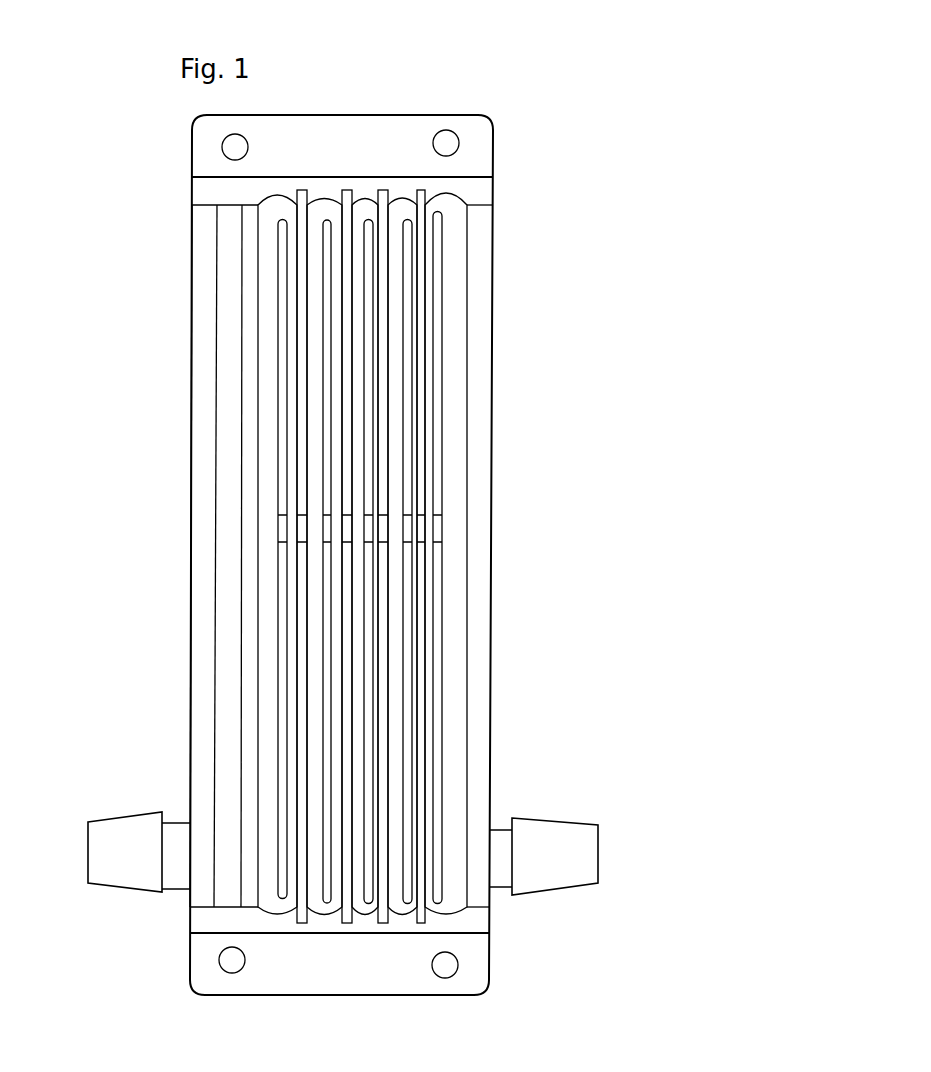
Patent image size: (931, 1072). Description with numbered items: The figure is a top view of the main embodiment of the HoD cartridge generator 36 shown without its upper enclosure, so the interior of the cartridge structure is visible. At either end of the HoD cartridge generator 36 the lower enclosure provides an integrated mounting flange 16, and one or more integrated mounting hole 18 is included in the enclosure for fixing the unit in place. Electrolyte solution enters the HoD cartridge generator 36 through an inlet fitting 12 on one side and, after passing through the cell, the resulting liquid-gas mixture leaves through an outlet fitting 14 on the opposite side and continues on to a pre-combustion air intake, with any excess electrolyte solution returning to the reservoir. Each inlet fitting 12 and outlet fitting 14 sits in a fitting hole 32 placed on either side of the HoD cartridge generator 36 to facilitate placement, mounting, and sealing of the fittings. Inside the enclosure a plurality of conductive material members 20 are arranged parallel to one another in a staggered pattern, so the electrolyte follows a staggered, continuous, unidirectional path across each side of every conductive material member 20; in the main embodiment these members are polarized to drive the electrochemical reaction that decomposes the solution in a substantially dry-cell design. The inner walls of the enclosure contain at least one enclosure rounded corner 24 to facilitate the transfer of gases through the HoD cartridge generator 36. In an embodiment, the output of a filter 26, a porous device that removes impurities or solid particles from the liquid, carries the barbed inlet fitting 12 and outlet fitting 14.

The inlet fitting 12 is at (88, 858).
The outlet fitting 14 is at (530, 820).
The integrated mounting flange 16 is at (493, 157).
The integrated mounting hole 18 is at (458, 964).
The conductive material member 20 is at (438, 313).
The enclosure rounded corner 24 is at (455, 194).
The filter 26 is at (213, 777).
The fitting hole 32 is at (183, 893).
The HoD cartridge generator 36 is at (190, 250).